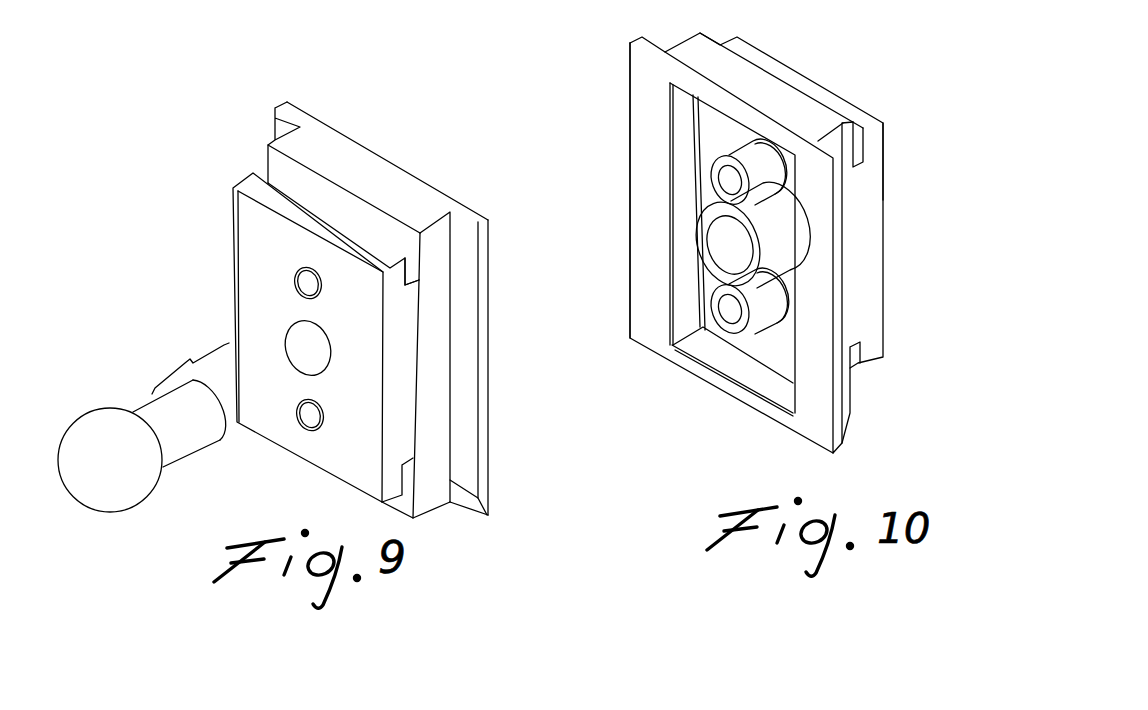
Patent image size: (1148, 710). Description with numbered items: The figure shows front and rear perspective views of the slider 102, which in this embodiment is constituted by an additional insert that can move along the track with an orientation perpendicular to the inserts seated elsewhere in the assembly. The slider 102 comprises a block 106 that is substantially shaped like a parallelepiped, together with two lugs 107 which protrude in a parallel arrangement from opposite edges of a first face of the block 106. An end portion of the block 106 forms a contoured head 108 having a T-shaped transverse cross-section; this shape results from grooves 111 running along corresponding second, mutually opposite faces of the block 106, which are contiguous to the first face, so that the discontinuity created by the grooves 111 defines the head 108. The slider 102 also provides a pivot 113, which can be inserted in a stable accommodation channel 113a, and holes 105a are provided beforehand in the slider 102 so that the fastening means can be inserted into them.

In FIG. 9, the slider 102 is at (214, 150).
In FIG. 10, the slider 102 is at (615, 50).
In FIG. 9, the holes 105a is at (300, 273).
In FIG. 10, the holes 105a is at (720, 173).
In FIG. 9, the block 106 is at (392, 308).
In FIG. 10, the block 106 is at (730, 240).
In FIG. 9, the lugs 107 is at (275, 123).
In FIG. 10, the lugs 107 is at (628, 117).
In FIG. 9, the head 108 is at (251, 356).
In FIG. 10, the head 108 is at (892, 114).
In FIG. 9, the grooves 111 is at (313, 188).
In FIG. 10, the grooves 111 is at (858, 147).
In FIG. 9, the pivot 113 is at (97, 430).
In FIG. 9, the accommodation channel 113a is at (292, 338).
In FIG. 10, the accommodation channel 113a is at (713, 242).